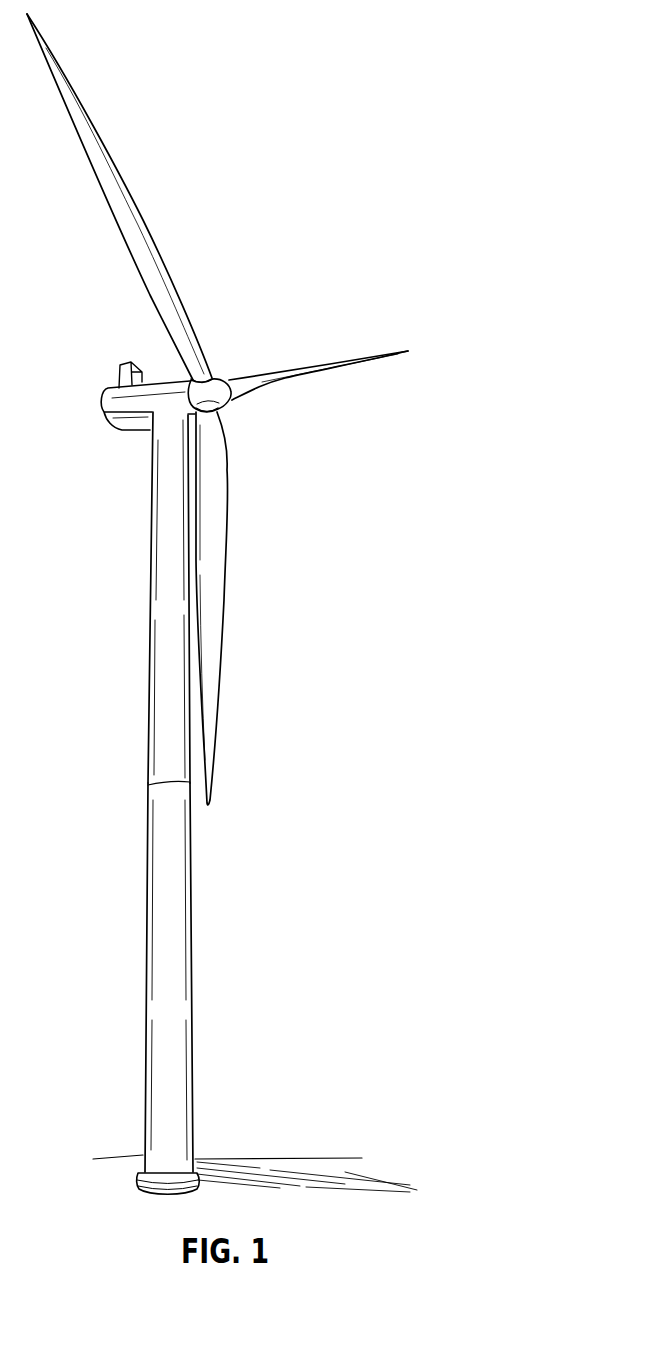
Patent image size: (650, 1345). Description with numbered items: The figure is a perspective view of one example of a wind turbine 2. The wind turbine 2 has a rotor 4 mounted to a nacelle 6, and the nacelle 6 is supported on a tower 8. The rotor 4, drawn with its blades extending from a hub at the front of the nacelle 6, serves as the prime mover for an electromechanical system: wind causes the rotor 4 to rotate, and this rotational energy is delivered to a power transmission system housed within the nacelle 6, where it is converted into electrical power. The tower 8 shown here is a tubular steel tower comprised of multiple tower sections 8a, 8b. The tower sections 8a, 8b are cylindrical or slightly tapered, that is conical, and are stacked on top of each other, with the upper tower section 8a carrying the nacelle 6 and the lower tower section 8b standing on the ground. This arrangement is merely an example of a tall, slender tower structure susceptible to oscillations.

The wind turbine 2 is at (342, 244).
The rotor 4 is at (67, 104).
The nacelle 6 is at (101, 408).
The tower 8 is at (154, 803).
The tower section 8a is at (161, 583).
The tower section 8b is at (160, 968).